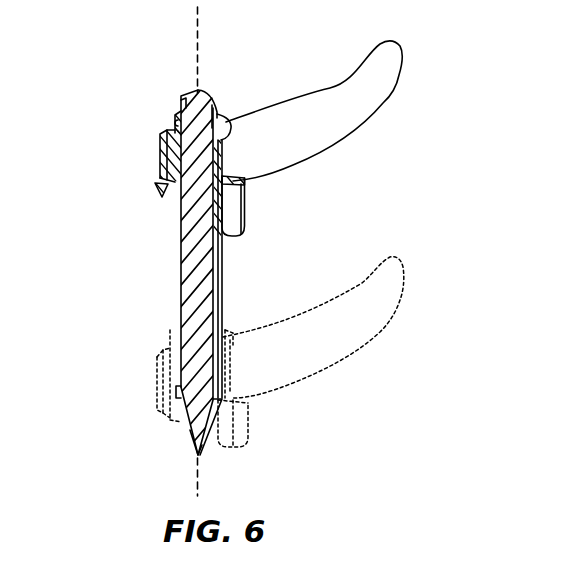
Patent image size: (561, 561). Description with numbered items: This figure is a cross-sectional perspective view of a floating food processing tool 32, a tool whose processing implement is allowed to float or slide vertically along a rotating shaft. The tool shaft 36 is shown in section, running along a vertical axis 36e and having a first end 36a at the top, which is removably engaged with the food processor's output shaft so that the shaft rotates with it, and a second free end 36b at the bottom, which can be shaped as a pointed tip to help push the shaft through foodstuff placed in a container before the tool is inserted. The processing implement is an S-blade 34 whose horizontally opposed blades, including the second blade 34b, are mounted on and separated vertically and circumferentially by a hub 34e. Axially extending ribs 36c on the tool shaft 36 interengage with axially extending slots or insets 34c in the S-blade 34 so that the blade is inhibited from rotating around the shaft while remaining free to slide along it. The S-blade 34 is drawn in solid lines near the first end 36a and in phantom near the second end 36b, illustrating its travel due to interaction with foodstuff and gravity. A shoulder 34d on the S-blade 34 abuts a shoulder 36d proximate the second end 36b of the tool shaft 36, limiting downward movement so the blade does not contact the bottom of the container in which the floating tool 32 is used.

The floating food processing tool 32 is at (223, 289).
The S-blade 34 is at (244, 208).
The second blade 34b is at (373, 108).
The axially extending slots or insets 34c is at (176, 122).
The shoulder of the S-blade 34d is at (175, 177).
The hub 34e is at (244, 185).
The tool shaft 36 is at (181, 257).
The first end of the tool shaft 36a is at (207, 93).
The second free end of the tool shaft 36b is at (197, 457).
The axially extending ribs 36c is at (225, 117).
The shoulder of the tool shaft 36d is at (181, 392).
The vertical axis 36e is at (198, 30).